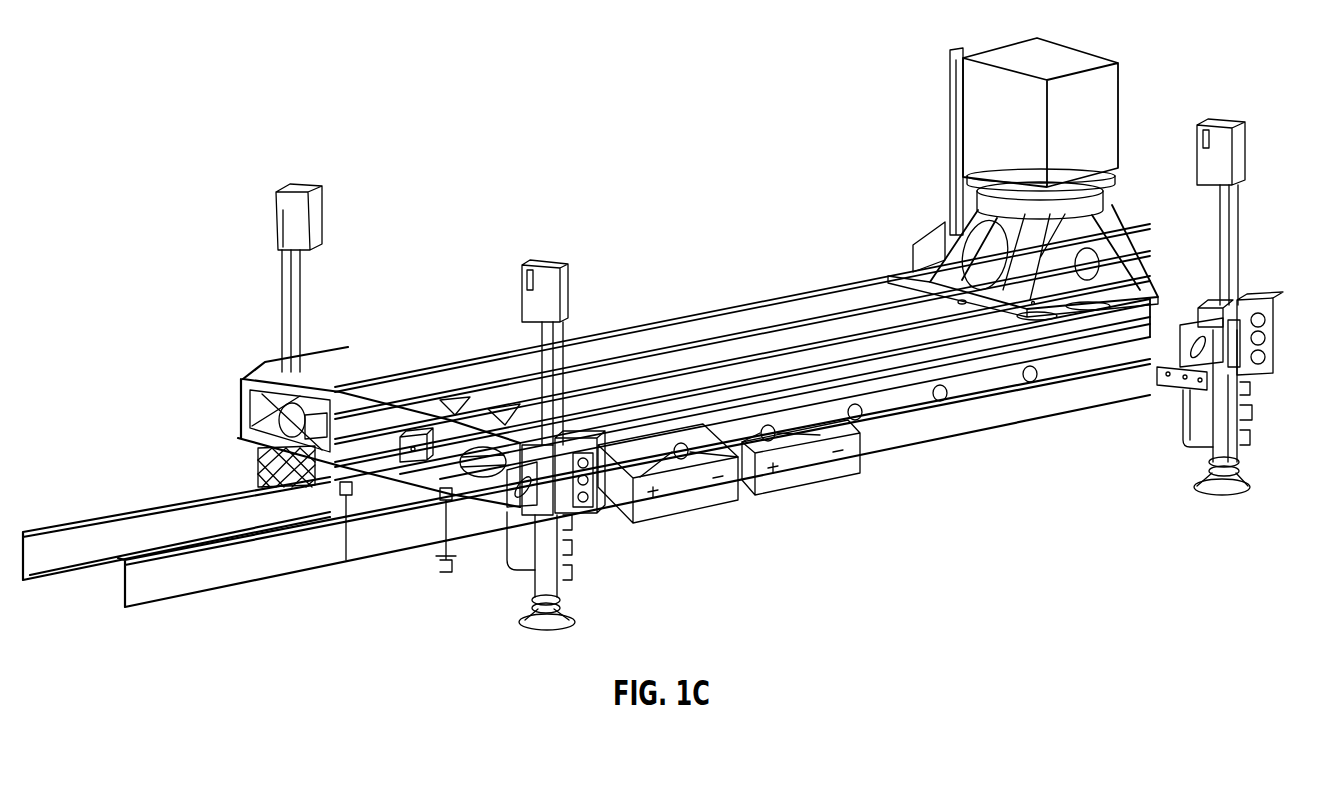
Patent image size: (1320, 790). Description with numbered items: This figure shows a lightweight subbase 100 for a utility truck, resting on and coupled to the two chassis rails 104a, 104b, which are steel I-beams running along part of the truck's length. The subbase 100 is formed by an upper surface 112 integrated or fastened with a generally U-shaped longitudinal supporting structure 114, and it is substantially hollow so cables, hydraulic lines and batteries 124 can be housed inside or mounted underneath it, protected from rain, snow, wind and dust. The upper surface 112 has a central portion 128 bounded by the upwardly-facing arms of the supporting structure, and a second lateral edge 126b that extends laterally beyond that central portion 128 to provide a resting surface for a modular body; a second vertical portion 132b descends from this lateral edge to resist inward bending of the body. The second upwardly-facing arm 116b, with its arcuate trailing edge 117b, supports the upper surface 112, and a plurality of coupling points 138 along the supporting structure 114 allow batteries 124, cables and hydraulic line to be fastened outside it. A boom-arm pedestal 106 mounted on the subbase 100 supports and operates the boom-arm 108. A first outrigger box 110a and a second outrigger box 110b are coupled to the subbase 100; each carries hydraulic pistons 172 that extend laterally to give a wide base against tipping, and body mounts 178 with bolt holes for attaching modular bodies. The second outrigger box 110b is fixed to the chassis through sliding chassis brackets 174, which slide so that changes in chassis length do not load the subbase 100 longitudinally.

The lightweight subbase 100 is at (375, 116).
The chassis rail 104a is at (30, 566).
The chassis rail 104b is at (178, 590).
The boom-arm pedestal 106 is at (963, 217).
The boom-arm 108 is at (990, 133).
The first outrigger box 110a is at (1182, 300).
The second outrigger box 110b is at (395, 443).
The upper surface 112 is at (798, 336).
The longitudinal supporting structure 114 is at (1026, 358).
The second upwardly-facing arm 116b is at (853, 407).
The arcuate trailing edge 117b is at (1083, 352).
The batteries 124 is at (643, 510).
The second lateral edge 126b is at (910, 352).
The central portion 128 is at (728, 350).
The second vertical portion 132b is at (983, 347).
The coupling points 138 is at (680, 458).
The hydraulic pistons 172 is at (282, 285).
The sliding chassis brackets 174 is at (347, 518).
The body mounts 178 is at (1180, 388).